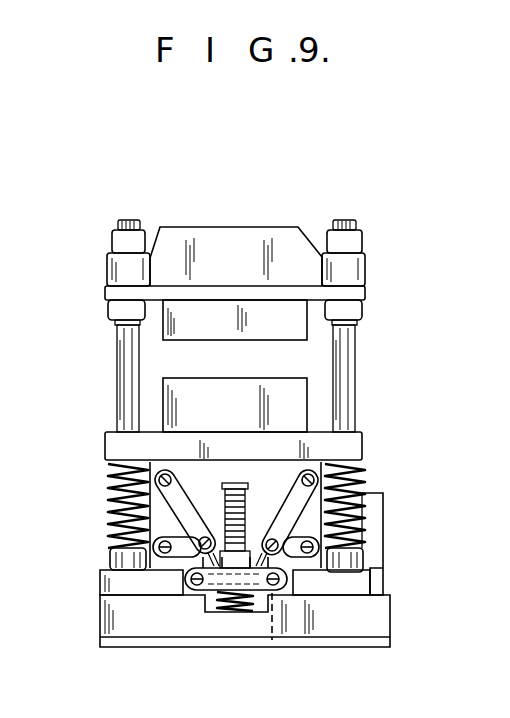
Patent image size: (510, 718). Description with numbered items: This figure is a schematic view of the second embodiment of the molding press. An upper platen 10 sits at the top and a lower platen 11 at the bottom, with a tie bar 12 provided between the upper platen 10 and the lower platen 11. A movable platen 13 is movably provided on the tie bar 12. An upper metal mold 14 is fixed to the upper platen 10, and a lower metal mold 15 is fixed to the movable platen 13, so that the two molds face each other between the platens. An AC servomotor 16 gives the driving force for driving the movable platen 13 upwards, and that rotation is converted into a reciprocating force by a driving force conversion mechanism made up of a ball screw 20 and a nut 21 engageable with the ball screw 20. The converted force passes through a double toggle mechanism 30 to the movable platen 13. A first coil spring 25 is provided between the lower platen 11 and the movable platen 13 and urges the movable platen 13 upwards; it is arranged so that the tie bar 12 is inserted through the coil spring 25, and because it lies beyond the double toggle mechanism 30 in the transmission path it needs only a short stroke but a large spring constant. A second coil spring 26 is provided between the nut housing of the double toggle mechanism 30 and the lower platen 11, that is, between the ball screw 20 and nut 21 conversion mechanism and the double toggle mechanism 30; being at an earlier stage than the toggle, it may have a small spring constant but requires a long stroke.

The upper platen 10 is at (366, 274).
The lower platen 11 is at (393, 603).
The tie bar 12 is at (358, 352).
The movable platen 13 is at (363, 452).
The upper metal mold 14 is at (248, 342).
The lower metal mold 15 is at (222, 377).
The AC servomotor 16 is at (385, 533).
The ball screw 20 is at (236, 485).
The nut 21 is at (272, 640).
The first coil spring 25 is at (108, 473).
The second coil spring 26 is at (208, 612).
The double toggle mechanism 30 is at (363, 481).